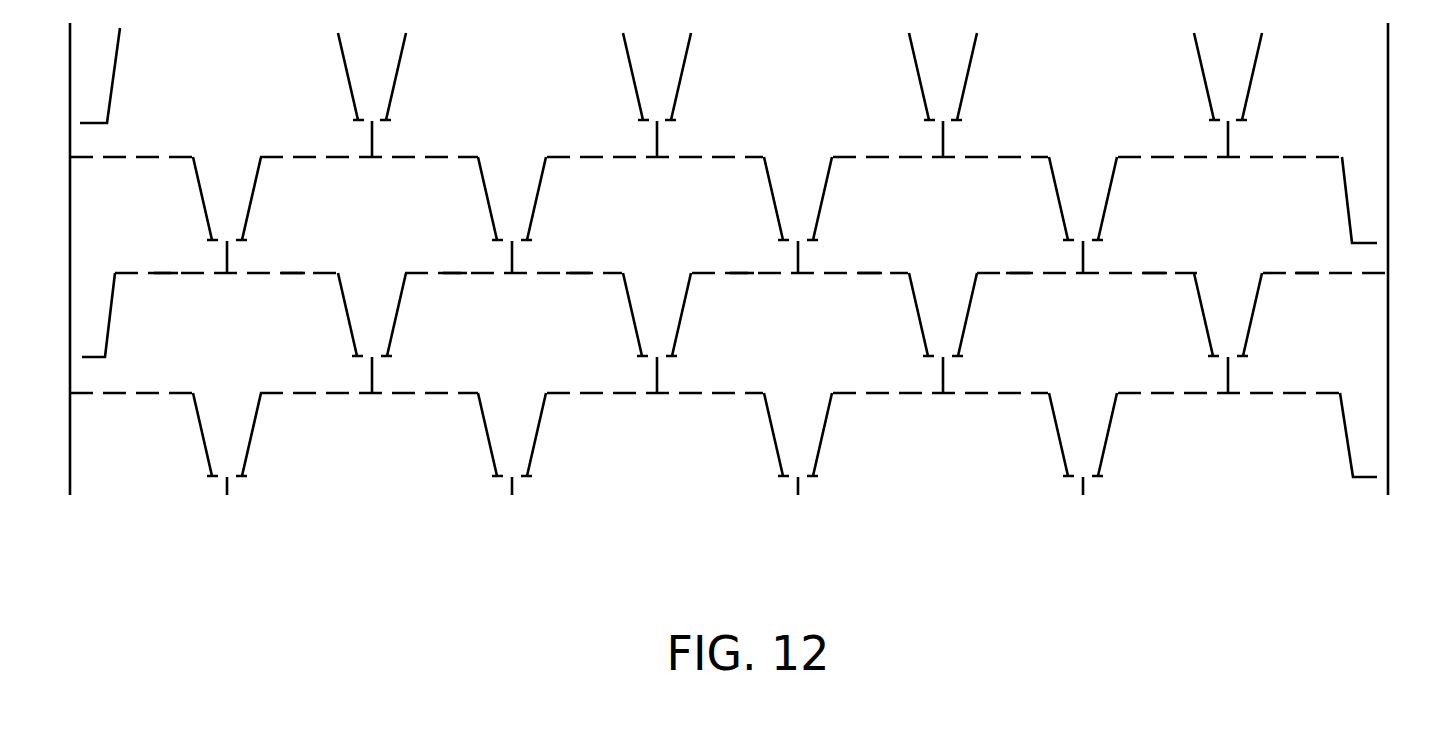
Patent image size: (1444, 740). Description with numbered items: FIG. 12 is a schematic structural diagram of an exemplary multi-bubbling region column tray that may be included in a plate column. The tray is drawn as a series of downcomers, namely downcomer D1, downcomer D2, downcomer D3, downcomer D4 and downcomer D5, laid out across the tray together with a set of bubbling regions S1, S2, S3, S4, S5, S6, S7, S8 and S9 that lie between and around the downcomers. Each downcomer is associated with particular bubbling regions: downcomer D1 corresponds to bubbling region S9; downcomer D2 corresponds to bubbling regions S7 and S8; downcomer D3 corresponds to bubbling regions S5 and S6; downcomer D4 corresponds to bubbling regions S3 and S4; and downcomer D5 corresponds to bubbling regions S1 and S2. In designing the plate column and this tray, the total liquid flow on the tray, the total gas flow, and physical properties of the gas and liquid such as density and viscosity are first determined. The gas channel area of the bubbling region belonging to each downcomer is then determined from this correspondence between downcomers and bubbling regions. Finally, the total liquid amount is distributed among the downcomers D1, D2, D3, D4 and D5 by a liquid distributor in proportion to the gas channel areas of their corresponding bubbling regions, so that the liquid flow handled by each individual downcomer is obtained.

The downcomer D1 is at (1386, 212).
The downcomer D2 is at (1107, 211).
The downcomer D3 is at (820, 217).
The downcomer D4 is at (537, 213).
The downcomer D5 is at (248, 213).
The bubbling region S1 is at (166, 255).
The bubbling region S2 is at (293, 255).
The bubbling region S3 is at (455, 255).
The bubbling region S4 is at (578, 255).
The bubbling region S5 is at (742, 255).
The bubbling region S6 is at (870, 255).
The bubbling region S7 is at (1018, 255).
The bubbling region S8 is at (1155, 255).
The bubbling region S9 is at (1307, 255).